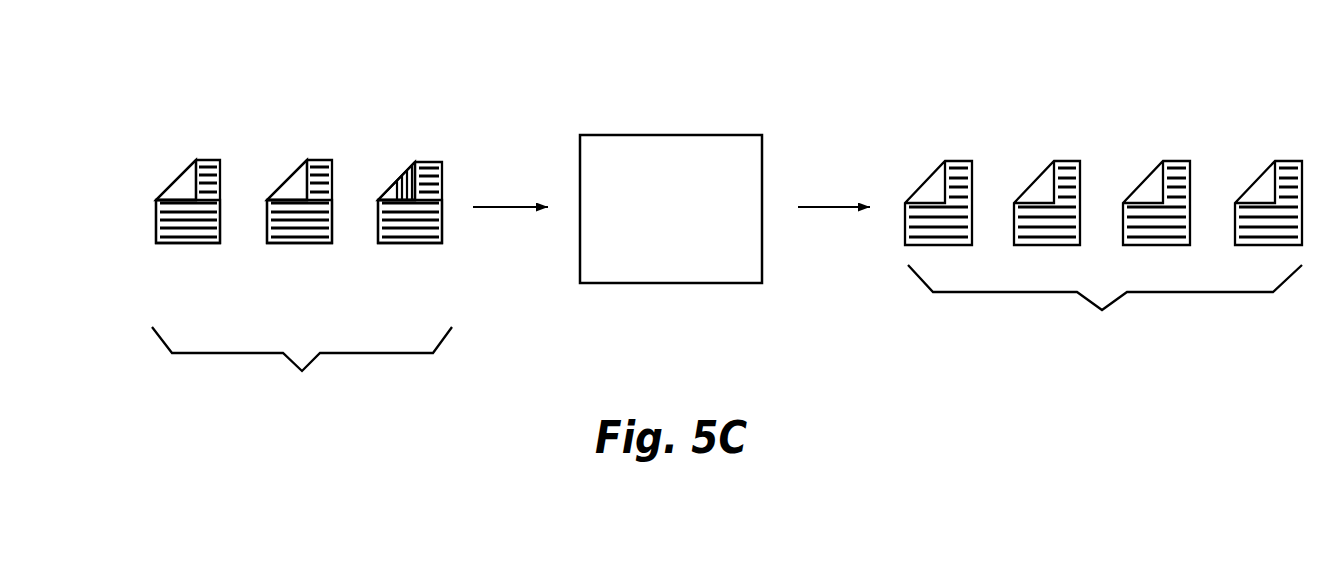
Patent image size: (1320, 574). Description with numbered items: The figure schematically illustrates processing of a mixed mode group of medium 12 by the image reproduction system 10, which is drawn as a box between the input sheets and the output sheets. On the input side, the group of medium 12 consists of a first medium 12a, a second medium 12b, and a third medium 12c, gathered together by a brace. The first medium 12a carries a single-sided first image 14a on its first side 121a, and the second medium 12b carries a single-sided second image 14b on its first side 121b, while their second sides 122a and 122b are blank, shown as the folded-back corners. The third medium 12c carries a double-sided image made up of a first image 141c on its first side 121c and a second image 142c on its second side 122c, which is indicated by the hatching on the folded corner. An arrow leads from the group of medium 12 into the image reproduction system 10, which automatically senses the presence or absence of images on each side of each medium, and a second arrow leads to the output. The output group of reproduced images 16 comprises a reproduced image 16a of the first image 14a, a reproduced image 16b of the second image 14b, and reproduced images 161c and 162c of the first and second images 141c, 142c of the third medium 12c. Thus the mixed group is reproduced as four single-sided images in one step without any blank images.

The image reproduction system 10 is at (671, 209).
The medium 12 is at (302, 366).
The first medium 12a is at (176, 189).
The second medium 12b is at (292, 189).
The third medium 12c is at (412, 188).
The first image 14a is at (205, 235).
The second image 14b is at (322, 235).
The first side of first medium 121a is at (165, 240).
The first side of second medium 121b is at (283, 240).
The first side of third medium 121c is at (388, 240).
The second side of first medium 122a is at (172, 193).
The second side of second medium 122b is at (288, 193).
The second side of third medium 122c is at (395, 192).
The first image of third medium 141c is at (430, 237).
The second image of third medium 142c is at (403, 178).
The reproduced images 16 is at (1105, 305).
The reproduced image of first image 16a is at (927, 135).
The reproduced image of second image 16b is at (1043, 135).
The reproduced image of first image of third medium 161c is at (1152, 135).
The reproduced image of second image of third medium 162c is at (1263, 135).